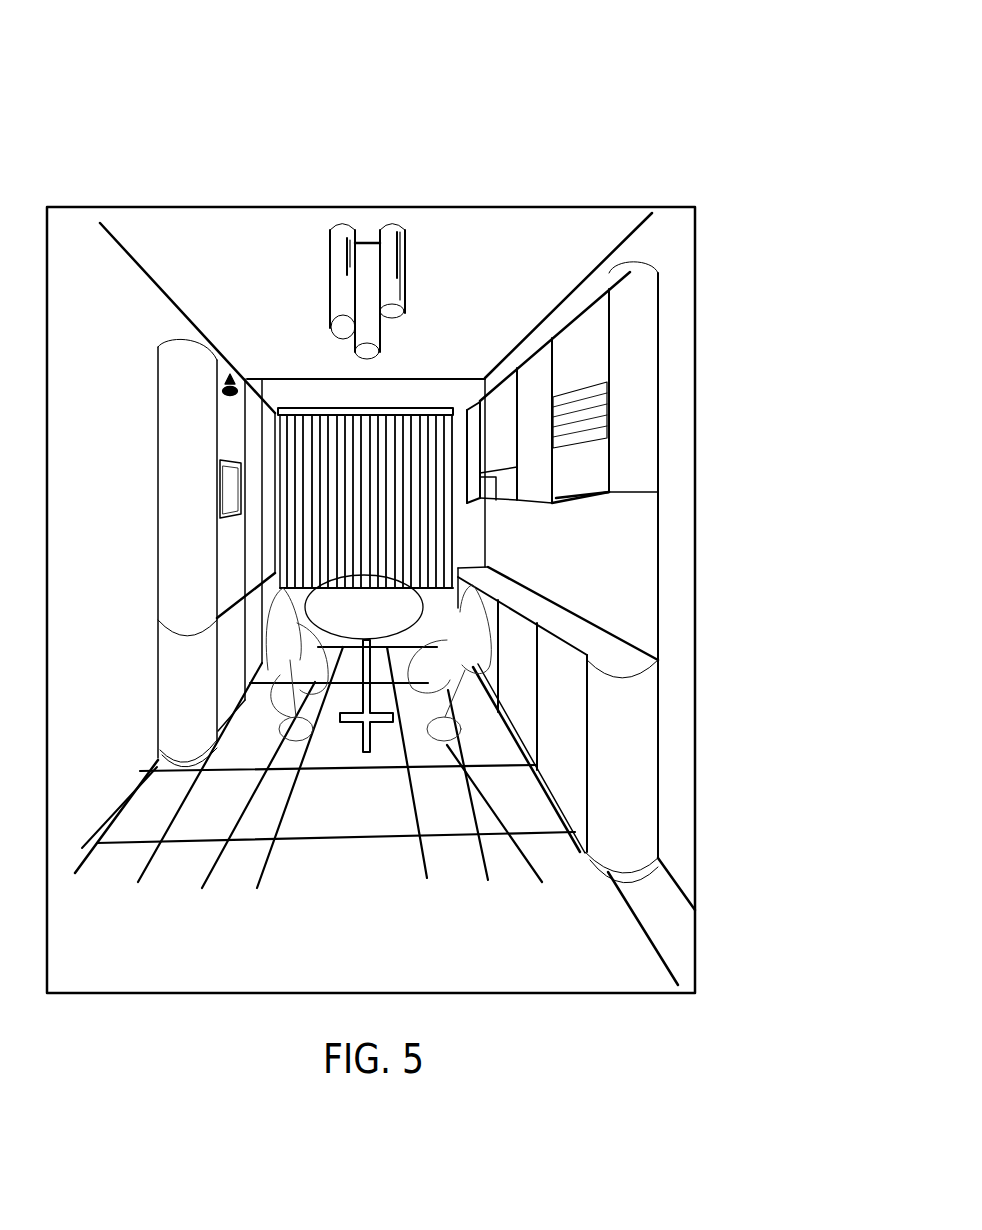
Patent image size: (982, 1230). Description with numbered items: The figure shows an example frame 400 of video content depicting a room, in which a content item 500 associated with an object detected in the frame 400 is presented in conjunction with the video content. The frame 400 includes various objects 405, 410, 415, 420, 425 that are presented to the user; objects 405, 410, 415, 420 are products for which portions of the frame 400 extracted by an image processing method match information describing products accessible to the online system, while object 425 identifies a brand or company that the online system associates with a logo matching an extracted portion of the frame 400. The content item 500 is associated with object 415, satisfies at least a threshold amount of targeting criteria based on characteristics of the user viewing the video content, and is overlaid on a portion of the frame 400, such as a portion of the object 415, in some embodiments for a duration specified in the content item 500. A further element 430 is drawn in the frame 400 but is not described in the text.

The frame 400 is at (372, 205).
The object 405 is at (345, 258).
The object 410 is at (582, 497).
The object 415 is at (579, 345).
The object 420 is at (465, 628).
The object 425 is at (289, 645).
The sensor 430 is at (229, 370).
The content item 500 is at (583, 448).